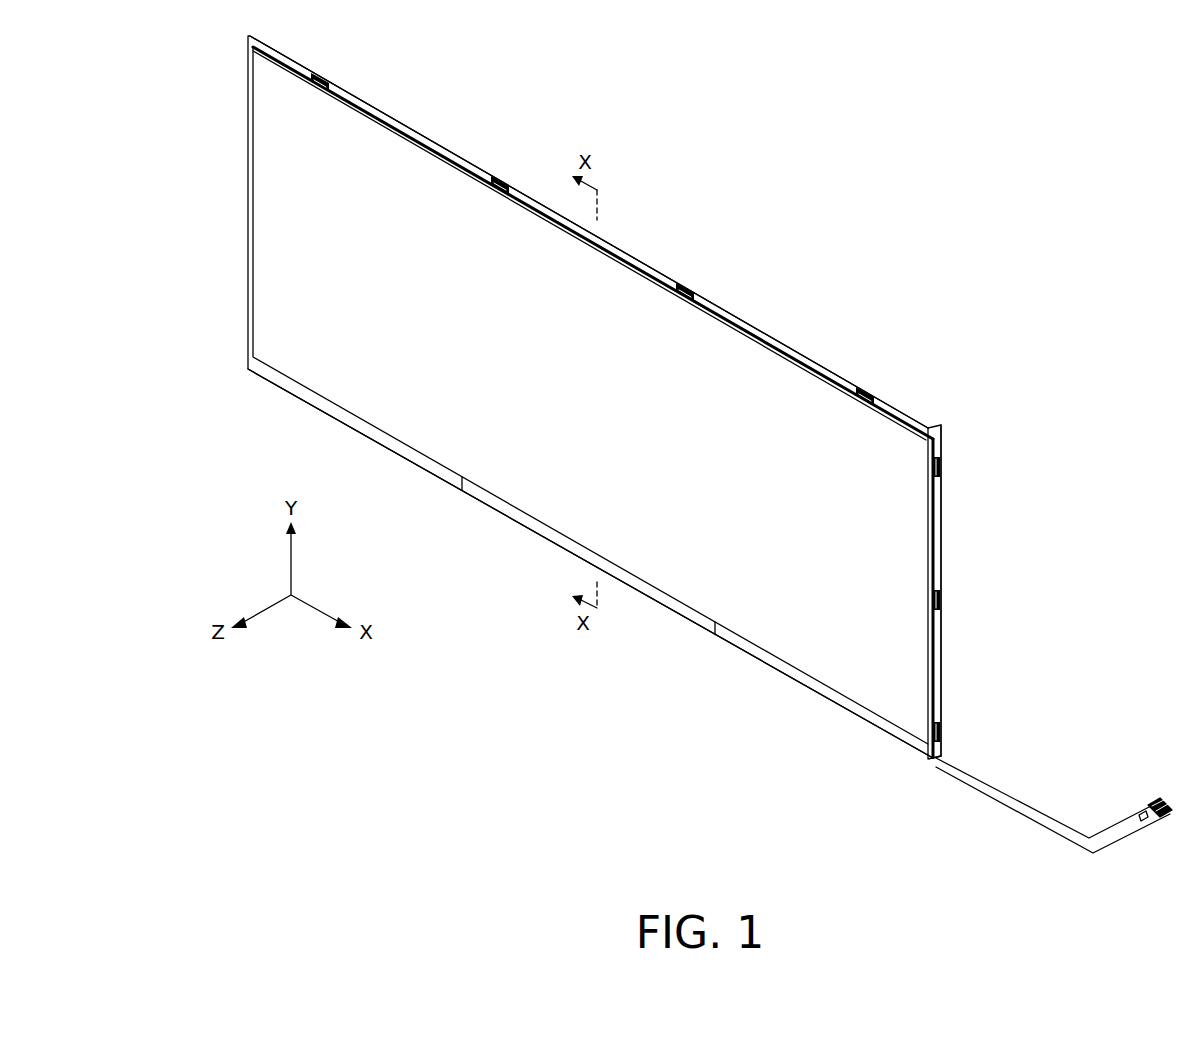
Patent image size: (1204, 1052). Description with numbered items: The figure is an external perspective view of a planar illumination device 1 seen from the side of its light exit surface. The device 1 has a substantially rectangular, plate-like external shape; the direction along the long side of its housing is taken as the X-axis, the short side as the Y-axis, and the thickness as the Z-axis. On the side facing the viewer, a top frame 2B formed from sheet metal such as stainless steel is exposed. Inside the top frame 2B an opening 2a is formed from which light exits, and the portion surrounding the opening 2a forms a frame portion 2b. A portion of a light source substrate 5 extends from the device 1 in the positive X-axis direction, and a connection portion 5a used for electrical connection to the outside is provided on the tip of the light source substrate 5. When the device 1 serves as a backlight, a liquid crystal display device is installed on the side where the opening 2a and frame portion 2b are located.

The planar illumination device 1 is at (881, 277).
The opening 2a is at (745, 338).
The frame portion 2b is at (777, 345).
The top frame 2B is at (943, 516).
The light source substrate 5 is at (1005, 797).
The connection portion 5a is at (1156, 800).